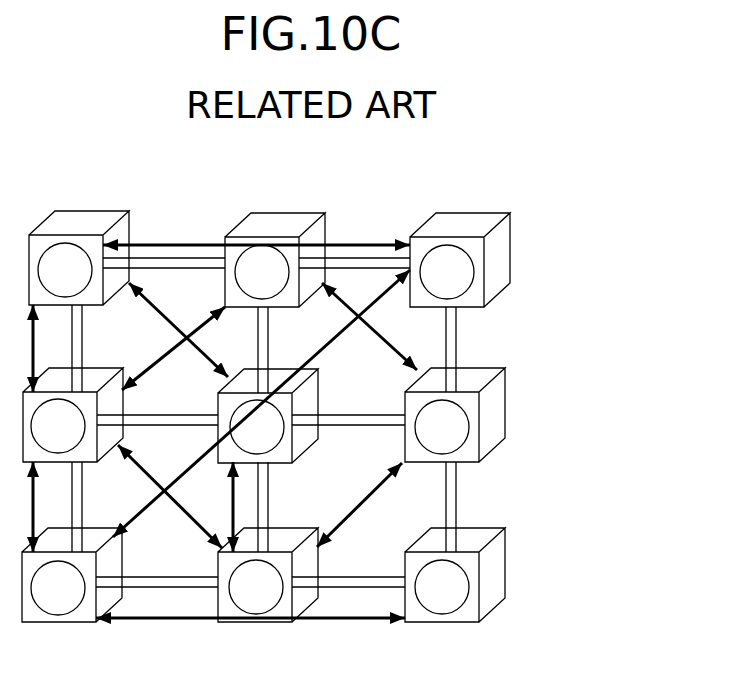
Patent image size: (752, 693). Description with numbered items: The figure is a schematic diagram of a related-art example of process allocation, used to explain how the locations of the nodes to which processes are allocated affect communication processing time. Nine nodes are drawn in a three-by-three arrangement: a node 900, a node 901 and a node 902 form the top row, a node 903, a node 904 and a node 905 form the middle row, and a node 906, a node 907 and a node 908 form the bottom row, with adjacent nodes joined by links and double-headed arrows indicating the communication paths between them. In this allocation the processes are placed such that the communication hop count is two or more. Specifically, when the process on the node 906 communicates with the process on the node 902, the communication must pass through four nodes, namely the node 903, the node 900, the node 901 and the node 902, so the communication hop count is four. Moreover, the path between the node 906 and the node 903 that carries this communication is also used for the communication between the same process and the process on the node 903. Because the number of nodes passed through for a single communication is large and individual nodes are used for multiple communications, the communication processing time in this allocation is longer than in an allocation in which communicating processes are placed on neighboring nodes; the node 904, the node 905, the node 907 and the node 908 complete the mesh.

The node 900 is at (102, 212).
The node 901 is at (296, 191).
The node 902 is at (480, 212).
The node 903 is at (103, 367).
The node 904 is at (284, 367).
The node 905 is at (483, 368).
The node 906 is at (108, 528).
The node 907 is at (290, 528).
The node 908 is at (483, 530).